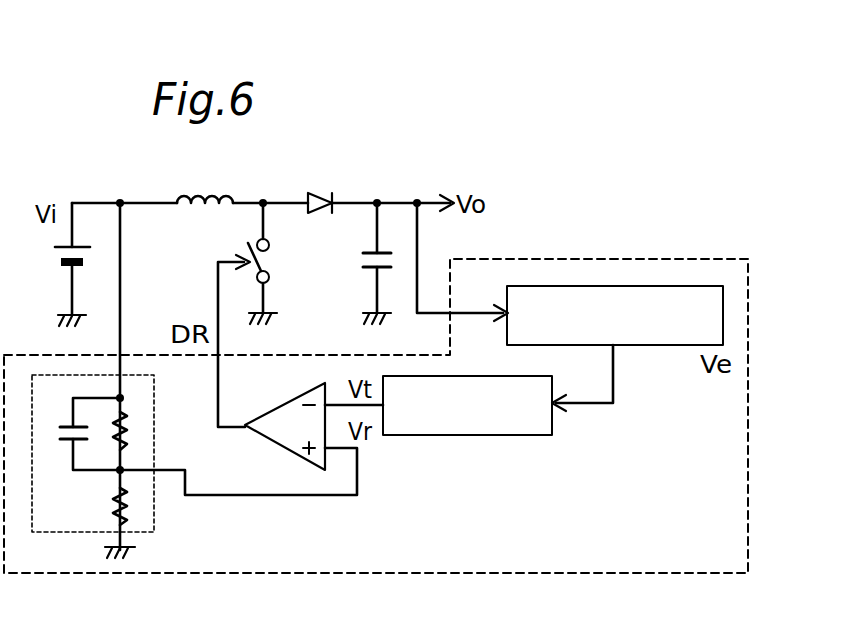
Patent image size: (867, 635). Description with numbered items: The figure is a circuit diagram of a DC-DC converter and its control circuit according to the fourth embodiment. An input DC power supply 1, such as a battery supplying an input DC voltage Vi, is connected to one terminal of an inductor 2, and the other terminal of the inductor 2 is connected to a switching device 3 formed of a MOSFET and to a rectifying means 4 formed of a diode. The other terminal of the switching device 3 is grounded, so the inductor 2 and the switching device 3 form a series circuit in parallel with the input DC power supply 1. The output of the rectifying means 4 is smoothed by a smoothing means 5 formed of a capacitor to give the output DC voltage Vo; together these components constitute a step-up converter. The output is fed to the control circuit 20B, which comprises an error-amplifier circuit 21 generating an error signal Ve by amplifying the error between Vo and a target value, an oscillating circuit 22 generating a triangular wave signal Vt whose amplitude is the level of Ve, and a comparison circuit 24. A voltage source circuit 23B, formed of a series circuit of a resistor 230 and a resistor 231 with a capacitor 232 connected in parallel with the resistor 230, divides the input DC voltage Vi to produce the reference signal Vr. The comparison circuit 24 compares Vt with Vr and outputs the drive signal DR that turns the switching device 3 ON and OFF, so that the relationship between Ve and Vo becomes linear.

The input DC power supply 1 is at (62, 268).
The inductor 2 is at (233, 201).
The switching device 3 is at (270, 277).
The rectifying means 4 is at (334, 198).
The smoothing means 5 is at (362, 261).
The control circuit 20B is at (735, 259).
The error-amplifier circuit 21 is at (723, 300).
The oscillating circuit 22 is at (552, 425).
The voltage source circuit 23B is at (155, 521).
The comparison circuit 24 is at (270, 440).
The resistor 230 is at (128, 428).
The resistor 231 is at (130, 500).
The capacitor 232 is at (62, 446).